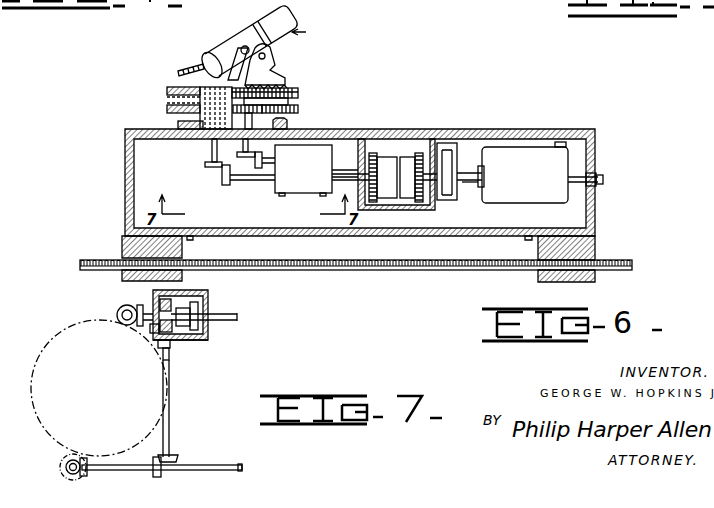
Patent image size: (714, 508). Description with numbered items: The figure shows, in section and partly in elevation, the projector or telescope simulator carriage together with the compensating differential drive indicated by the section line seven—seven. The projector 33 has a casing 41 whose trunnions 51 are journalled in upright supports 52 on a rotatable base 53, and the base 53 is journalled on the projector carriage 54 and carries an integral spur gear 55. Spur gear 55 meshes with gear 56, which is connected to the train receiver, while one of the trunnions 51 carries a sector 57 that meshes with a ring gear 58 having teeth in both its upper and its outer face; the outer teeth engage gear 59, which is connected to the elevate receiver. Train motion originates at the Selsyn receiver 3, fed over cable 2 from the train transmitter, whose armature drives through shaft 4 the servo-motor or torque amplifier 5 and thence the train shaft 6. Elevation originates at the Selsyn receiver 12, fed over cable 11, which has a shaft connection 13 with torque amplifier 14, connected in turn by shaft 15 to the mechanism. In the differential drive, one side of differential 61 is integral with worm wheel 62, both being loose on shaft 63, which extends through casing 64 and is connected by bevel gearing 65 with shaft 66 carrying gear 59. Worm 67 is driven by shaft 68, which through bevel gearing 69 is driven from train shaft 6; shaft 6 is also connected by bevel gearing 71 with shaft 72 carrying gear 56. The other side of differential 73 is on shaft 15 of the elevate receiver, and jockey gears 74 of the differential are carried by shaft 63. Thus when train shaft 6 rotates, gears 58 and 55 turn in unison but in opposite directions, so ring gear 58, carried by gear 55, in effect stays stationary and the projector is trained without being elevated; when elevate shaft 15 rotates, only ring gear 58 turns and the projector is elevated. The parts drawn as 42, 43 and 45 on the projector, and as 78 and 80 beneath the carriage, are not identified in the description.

In FIG. 6, the cable 2 is at (598, 178).
In FIG. 6, the Selsyn receiver 3 is at (485, 168).
In FIG. 6, the shaft 4 is at (466, 170).
In FIG. 6, the servo-motor or torque amplifier 5 is at (446, 146).
In FIG. 6, the shaft 6 is at (276, 158).
In FIG. 7, the shaft 6 is at (236, 466).
In FIG. 6, the cable 11 is at (592, 194).
In FIG. 6, the Selsyn receiver 12 is at (542, 205).
In FIG. 6, the shaft connection 13 is at (470, 186).
In FIG. 6, the torque amplifier 14 is at (415, 200).
In FIG. 6, the shaft 15 is at (338, 174).
In FIG. 7, the shaft 15 is at (238, 317).
In FIG. 6, the projector 33 is at (309, 31).
In FIG. 6, the casing 41 is at (238, 42).
In FIG. 6, the telescope ring 42 is at (272, 25).
In FIG. 6, the eyepiece 43 is at (206, 58).
In FIG. 6, the adjusting screw 45 is at (181, 72).
In FIG. 6, the trunnions 51 is at (270, 57).
In FIG. 6, the upright supports 52 is at (235, 48).
In FIG. 6, the rotatable base 53 is at (180, 116).
In FIG. 6, the projector carriage 54 is at (385, 130).
In FIG. 6, the spur gear 55 is at (299, 108).
In FIG. 6, the gear 56 is at (291, 101).
In FIG. 7, the gear 56 is at (60, 462).
In FIG. 6, the sector 57 is at (283, 78).
In FIG. 6, the ring gear 58 is at (296, 90).
In FIG. 6, the gear 59 is at (200, 100).
In FIG. 7, the gear 59 is at (116, 313).
In FIG. 7, the differential 61 is at (170, 350).
In FIG. 7, the worm wheel 62 is at (152, 331).
In FIG. 6, the shaft 63 is at (246, 181).
In FIG. 7, the shaft 63 is at (156, 310).
In FIG. 6, the casing 64 is at (305, 195).
In FIG. 7, the casing 64 is at (201, 339).
In FIG. 6, the bevel gearing 65 is at (222, 173).
In FIG. 7, the bevel gearing 65 is at (122, 308).
In FIG. 6, the shaft 66 is at (212, 156).
In FIG. 7, the shaft 66 is at (125, 320).
In FIG. 7, the worm 67 is at (160, 344).
In FIG. 7, the shaft 68 is at (170, 420).
In FIG. 7, the bevel gearing 69 is at (158, 457).
In FIG. 6, the bevel gearing 71 is at (240, 152).
In FIG. 7, the bevel gearing 71 is at (86, 476).
In FIG. 6, the shaft 72 is at (287, 122).
In FIG. 7, the shaft 72 is at (66, 470).
In FIG. 7, the other side of differential 73 is at (198, 311).
In FIG. 7, the jockey gears 74 is at (205, 336).
In FIG. 6, the foot 78 is at (123, 240).
In FIG. 6, the rack 80 is at (383, 271).